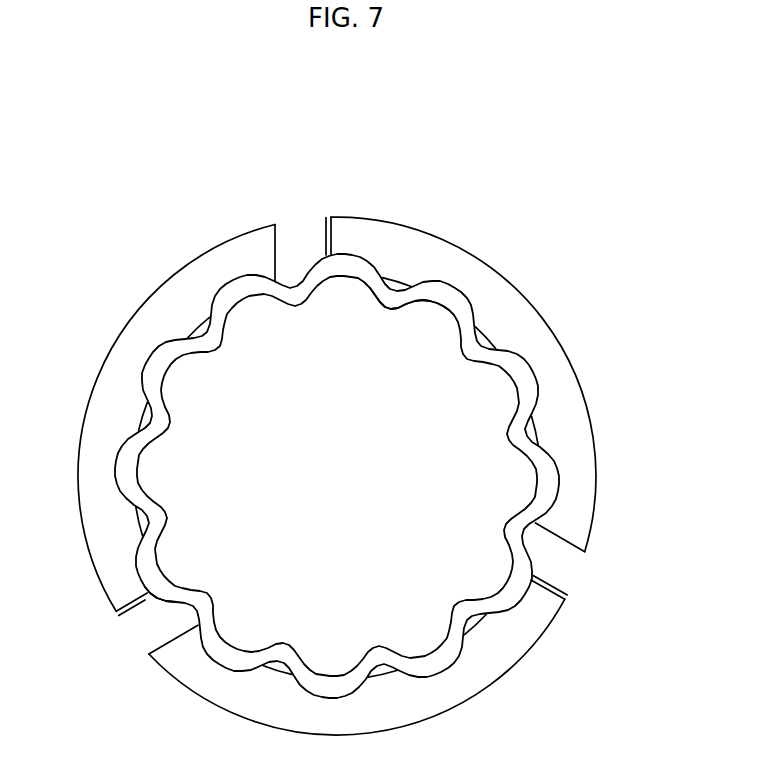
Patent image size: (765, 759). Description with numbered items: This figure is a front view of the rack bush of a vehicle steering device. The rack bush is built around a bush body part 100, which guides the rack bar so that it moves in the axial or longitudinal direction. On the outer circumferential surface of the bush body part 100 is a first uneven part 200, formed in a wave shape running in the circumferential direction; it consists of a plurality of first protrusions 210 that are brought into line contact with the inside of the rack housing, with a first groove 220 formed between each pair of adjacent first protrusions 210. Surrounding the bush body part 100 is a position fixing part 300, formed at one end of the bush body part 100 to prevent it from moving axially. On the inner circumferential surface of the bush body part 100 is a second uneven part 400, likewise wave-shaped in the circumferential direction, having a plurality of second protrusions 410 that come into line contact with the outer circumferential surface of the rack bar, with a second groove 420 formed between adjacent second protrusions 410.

The bush body part 100 is at (197, 598).
The first uneven part 200 is at (389, 437).
The first protrusions 210 is at (534, 373).
The first groove 220 is at (478, 342).
The position fixing part 300 is at (392, 213).
The second uneven part 400 is at (375, 391).
The second protrusions 410 is at (388, 309).
The second groove 420 is at (443, 307).